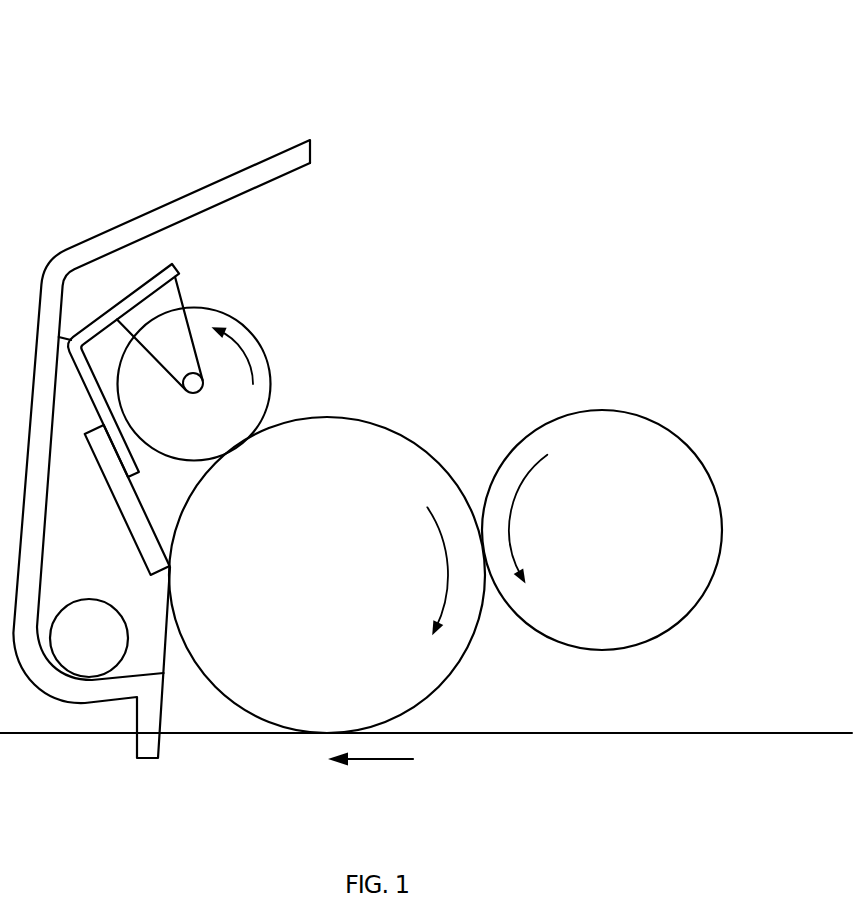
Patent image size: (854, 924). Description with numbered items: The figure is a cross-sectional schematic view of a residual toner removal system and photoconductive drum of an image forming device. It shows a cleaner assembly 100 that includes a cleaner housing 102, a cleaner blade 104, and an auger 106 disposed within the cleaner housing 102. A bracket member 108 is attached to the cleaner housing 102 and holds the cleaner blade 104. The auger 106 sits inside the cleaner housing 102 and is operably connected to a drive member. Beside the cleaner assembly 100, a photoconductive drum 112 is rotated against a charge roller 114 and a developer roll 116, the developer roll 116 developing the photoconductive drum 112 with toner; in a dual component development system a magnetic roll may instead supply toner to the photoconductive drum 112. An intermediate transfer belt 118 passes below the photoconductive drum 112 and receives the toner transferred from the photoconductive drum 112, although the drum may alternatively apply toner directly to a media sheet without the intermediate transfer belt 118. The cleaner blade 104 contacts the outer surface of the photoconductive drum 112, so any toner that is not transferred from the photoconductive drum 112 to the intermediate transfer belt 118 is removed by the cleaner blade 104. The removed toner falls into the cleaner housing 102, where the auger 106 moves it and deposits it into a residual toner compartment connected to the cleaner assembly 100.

The cleaner assembly 100 is at (125, 68).
The cleaner housing 102 is at (203, 188).
The cleaner blade 104 is at (118, 510).
The auger 106 is at (95, 600).
The bracket member 108 is at (160, 272).
The photoconductive drum 112 is at (343, 420).
The charge roller 114 is at (268, 360).
The developer roll 116 is at (605, 410).
The intermediate transfer belt 118 is at (597, 735).